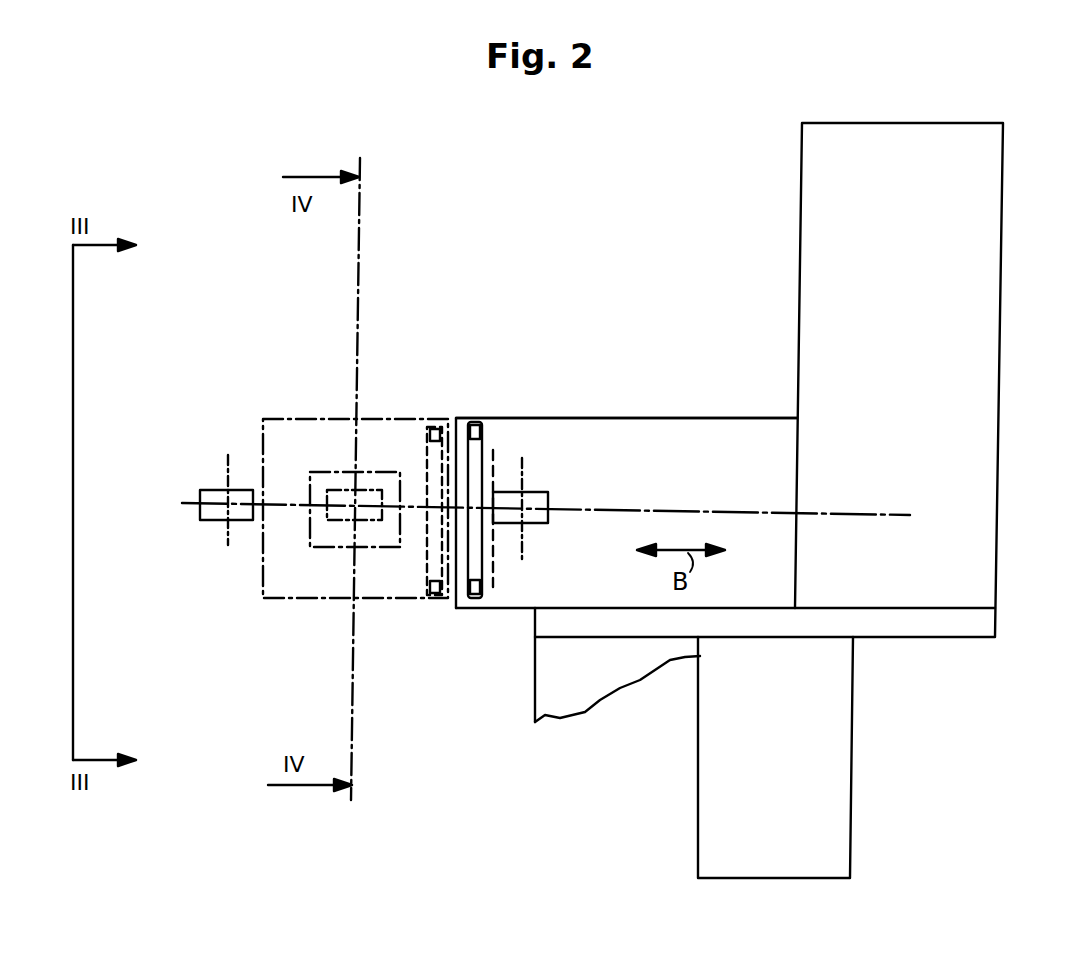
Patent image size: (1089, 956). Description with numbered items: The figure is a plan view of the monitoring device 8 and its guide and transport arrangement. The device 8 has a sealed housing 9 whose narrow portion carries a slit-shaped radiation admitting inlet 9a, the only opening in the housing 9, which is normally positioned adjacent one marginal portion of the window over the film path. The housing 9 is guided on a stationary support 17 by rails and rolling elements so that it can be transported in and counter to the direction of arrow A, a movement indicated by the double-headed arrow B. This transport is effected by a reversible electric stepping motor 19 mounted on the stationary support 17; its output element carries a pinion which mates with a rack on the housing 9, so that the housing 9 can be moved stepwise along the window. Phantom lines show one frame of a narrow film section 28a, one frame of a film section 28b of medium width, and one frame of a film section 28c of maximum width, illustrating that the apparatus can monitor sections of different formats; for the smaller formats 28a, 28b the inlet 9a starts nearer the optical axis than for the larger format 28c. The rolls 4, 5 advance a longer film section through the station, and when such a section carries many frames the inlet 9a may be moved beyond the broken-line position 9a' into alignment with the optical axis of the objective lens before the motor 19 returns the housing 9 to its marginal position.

The roll 4 is at (208, 490).
The roll 5 is at (543, 495).
The monitoring device 8 is at (497, 653).
The housing 9 is at (697, 418).
The radiation admitting inlet 9a is at (499, 481).
The broken-line position of the inlet 9a' is at (420, 472).
The stationary support 17 is at (972, 622).
The reversible electric stepping motor 19 is at (843, 730).
The narrow section 28a is at (327, 513).
The film section of medium width 28b is at (337, 547).
The film section of maximum width 28c is at (410, 600).